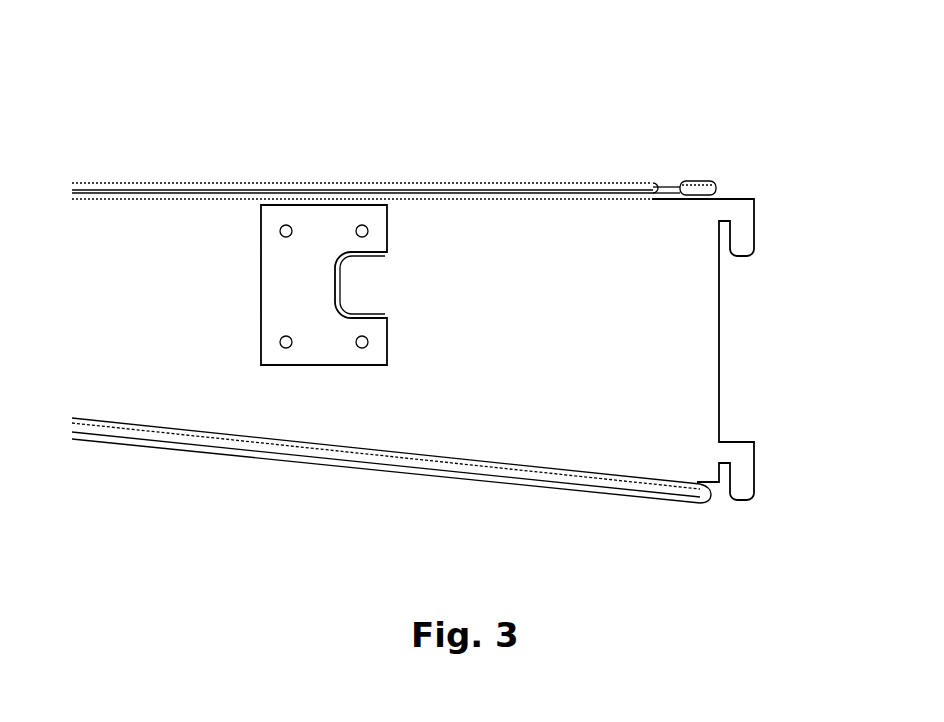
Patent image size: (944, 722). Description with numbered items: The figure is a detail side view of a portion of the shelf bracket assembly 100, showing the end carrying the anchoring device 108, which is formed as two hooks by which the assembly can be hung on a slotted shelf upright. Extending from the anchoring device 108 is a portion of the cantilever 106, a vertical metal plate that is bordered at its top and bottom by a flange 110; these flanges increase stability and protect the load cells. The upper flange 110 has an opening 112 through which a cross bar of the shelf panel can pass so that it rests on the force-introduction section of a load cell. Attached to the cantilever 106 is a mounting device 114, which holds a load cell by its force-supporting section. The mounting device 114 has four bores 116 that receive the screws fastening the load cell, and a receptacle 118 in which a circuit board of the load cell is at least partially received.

The shelf bracket assembly 100 is at (542, 84).
The cantilever 106 is at (560, 384).
The anchoring device 108 is at (780, 181).
The flange 110 is at (124, 190).
The opening 112 is at (666, 164).
The mounting device 114 is at (318, 346).
The bores 116 is at (290, 224).
The receptacle 118 is at (396, 284).